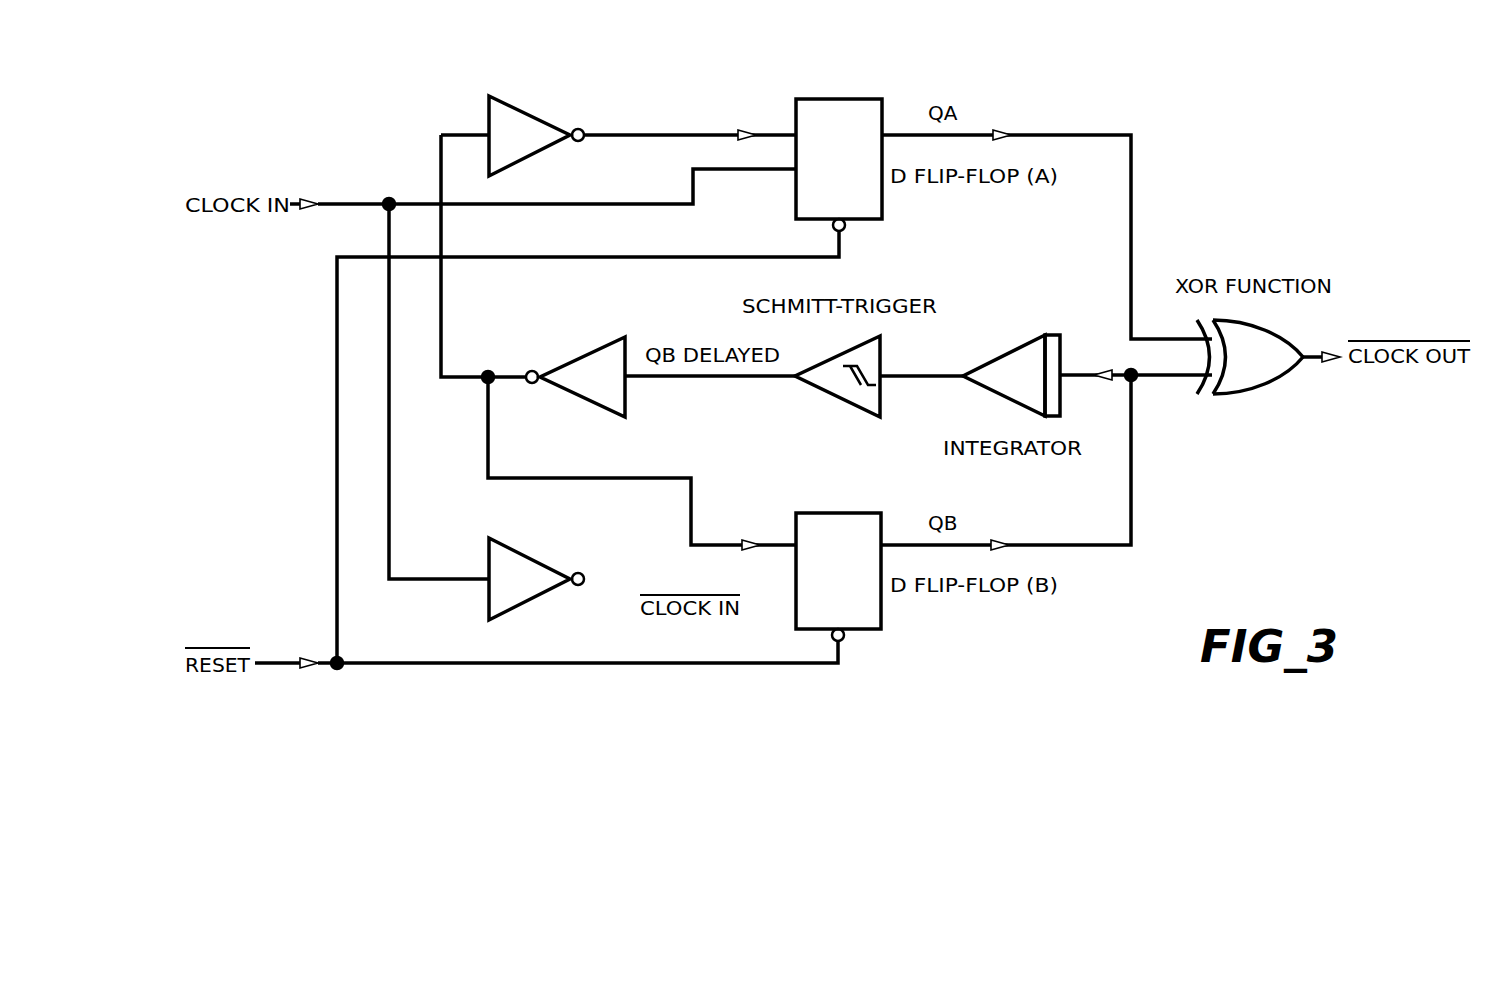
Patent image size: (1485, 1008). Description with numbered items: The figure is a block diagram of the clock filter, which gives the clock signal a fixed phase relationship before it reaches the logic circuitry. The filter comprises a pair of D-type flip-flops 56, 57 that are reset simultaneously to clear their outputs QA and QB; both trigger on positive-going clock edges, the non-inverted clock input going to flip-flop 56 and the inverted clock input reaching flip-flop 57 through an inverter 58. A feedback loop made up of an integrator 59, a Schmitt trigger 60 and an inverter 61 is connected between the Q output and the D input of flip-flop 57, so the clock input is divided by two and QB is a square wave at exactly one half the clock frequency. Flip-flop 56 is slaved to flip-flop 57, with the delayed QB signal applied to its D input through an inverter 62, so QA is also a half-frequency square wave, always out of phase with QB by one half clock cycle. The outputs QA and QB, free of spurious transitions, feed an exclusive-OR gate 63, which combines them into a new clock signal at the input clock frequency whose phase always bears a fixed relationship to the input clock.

The D-type flip-flop 56 is at (838, 99).
The D-type flip-flop 57 is at (838, 513).
The inverter 58 is at (535, 561).
The integrator 59 is at (1018, 348).
The Schmitt trigger 60 is at (828, 392).
The inverter 61 is at (590, 352).
The inverter 62 is at (537, 117).
The exclusive-OR gate 63 is at (1280, 378).